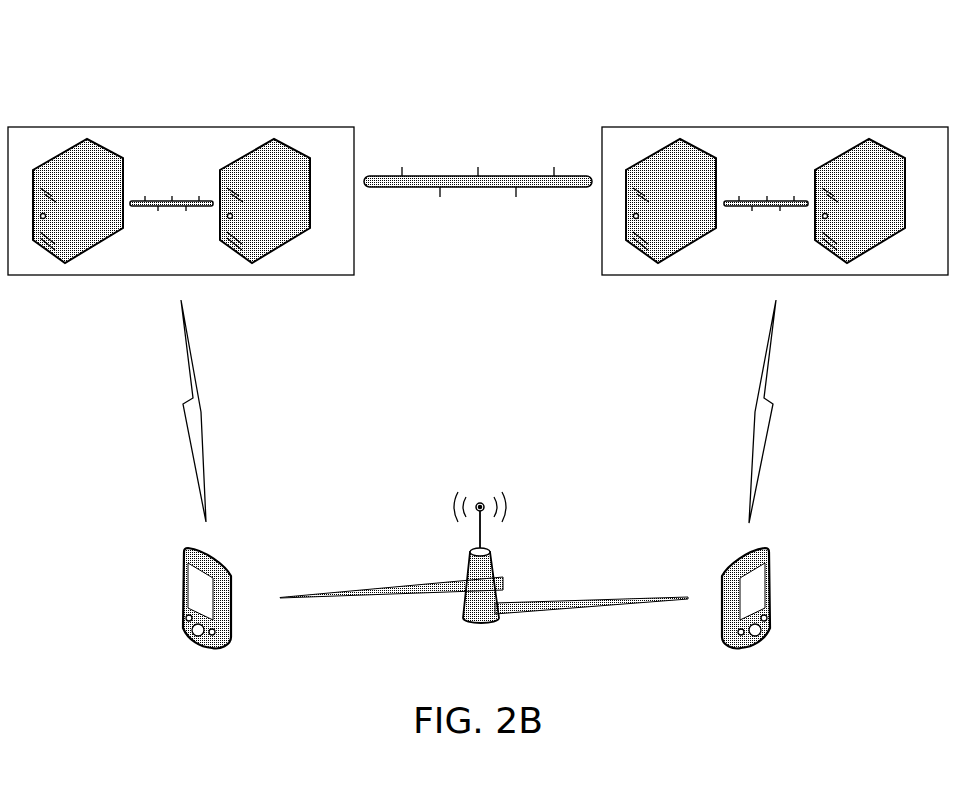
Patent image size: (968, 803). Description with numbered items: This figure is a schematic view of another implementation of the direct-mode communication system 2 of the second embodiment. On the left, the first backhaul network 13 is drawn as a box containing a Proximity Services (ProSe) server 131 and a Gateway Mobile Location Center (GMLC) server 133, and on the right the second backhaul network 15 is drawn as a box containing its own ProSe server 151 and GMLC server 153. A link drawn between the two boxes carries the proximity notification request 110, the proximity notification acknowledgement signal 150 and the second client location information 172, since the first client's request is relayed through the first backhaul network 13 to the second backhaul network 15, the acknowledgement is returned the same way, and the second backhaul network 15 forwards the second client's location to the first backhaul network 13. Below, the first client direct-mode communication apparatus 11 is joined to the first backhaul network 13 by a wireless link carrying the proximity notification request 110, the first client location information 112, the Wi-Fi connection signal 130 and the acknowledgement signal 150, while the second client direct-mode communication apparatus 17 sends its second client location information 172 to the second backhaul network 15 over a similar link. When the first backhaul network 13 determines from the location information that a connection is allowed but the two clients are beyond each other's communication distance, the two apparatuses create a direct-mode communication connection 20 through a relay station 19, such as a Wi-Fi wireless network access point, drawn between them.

The direct-mode communication system 2 is at (472, 76).
The first client direct-mode communication apparatus 11 is at (180, 600).
The first backhaul network 13 is at (341, 270).
The Proximity Services (ProSe) server 131 is at (103, 226).
The Gateway Mobile Location Center (GMLC) server 133 is at (290, 226).
The second backhaul network 15 is at (934, 270).
The ProSe server 151 is at (696, 226).
The GMLC server 153 is at (885, 226).
The second client direct-mode communication apparatus 17 is at (772, 597).
The relay station 19 is at (497, 565).
The direct-mode communication connection 20 is at (393, 583).
The proximity notification request 110 is at (478, 234).
The first client location information 112 is at (126, 411).
The Wi-Fi connection signal 130 is at (197, 472).
The proximity notification acknowledgement signal 150 is at (452, 155).
The second client location information 172 is at (740, 458).